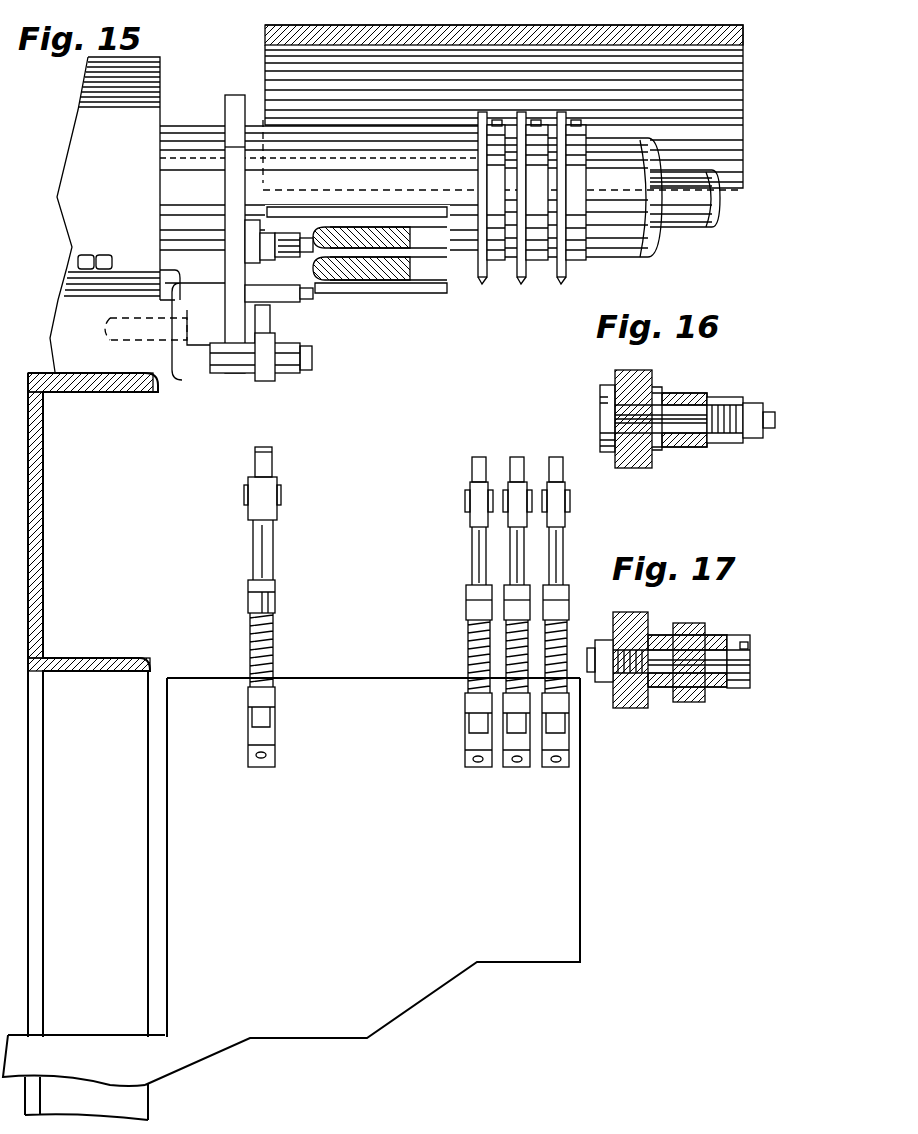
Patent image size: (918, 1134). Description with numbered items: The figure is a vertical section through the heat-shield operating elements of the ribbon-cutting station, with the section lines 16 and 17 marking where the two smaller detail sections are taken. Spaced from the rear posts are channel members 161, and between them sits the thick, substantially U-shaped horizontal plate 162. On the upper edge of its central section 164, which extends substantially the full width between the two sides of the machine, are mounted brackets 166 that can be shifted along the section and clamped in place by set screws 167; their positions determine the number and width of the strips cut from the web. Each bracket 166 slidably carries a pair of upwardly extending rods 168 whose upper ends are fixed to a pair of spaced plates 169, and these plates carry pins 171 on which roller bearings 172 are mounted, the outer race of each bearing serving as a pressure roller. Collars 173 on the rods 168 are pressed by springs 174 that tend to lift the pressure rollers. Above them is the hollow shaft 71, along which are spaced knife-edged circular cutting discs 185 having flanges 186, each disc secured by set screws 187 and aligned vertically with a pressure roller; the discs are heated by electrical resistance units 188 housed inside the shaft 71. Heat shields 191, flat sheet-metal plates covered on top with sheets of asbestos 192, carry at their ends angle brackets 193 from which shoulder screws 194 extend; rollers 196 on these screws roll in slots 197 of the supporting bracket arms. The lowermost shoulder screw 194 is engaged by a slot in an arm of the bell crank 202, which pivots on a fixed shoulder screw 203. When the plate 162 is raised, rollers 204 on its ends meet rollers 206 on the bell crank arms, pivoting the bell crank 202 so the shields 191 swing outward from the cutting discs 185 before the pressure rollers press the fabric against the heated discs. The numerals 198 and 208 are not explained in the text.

In FIG. 15, the section line 16— 16 is at (212, 246).
In FIG. 15, the section line 17— 17 is at (197, 372).
In FIG. 15, the hollow shaft 71 is at (650, 166).
In FIG. 15, the channel members 161 is at (132, 1096).
In FIG. 15, the horizontal plate 162 is at (586, 848).
In FIG. 15, the central section 164 is at (354, 680).
In FIG. 15, the brackets 166 is at (255, 732).
In FIG. 15, the set screws 167 is at (261, 758).
In FIG. 15, the rods 168 is at (262, 556).
In FIG. 15, the spaced plates 169 is at (568, 512).
In FIG. 15, the pins 171 is at (281, 495).
In FIG. 15, the roller bearings 172 is at (556, 456).
In FIG. 15, the collars 173 is at (255, 604).
In FIG. 15, the springs 174 is at (255, 637).
In FIG. 15, the cutting discs 185 is at (524, 118).
In FIG. 15, the flanges 186 is at (566, 282).
In FIG. 15, the set screws 187 is at (498, 126).
In FIG. 15, the electrical resistance units 188 is at (688, 226).
In FIG. 15, the heat shields 191 is at (440, 297).
In FIG. 15, the sheets of asbestos 192 is at (378, 268).
In FIG. 15, the angle brackets 193 is at (275, 232).
In FIG. 16, the angle brackets 193 is at (722, 398).
In FIG. 15, the shoulder screws 194 is at (312, 242).
In FIG. 16, the shoulder screws 194 is at (770, 432).
In FIG. 16, the rollers 196 is at (622, 382).
In FIG. 16, the slots 197 is at (650, 386).
In FIG. 15, the plate 198 is at (238, 96).
In FIG. 16, the plate 198 is at (650, 468).
In FIG. 17, the plate 198 is at (633, 710).
In FIG. 15, the bell crank 202 is at (262, 380).
In FIG. 17, the bell crank 202 is at (688, 704).
In FIG. 15, the fixed shoulder screw 203 is at (300, 378).
In FIG. 17, the fixed shoulder screw 203 is at (745, 690).
In FIG. 15, the rollers 204 is at (265, 450).
In FIG. 15, the rollers 206 is at (272, 338).
In FIG. 15, the housing 208 is at (742, 44).